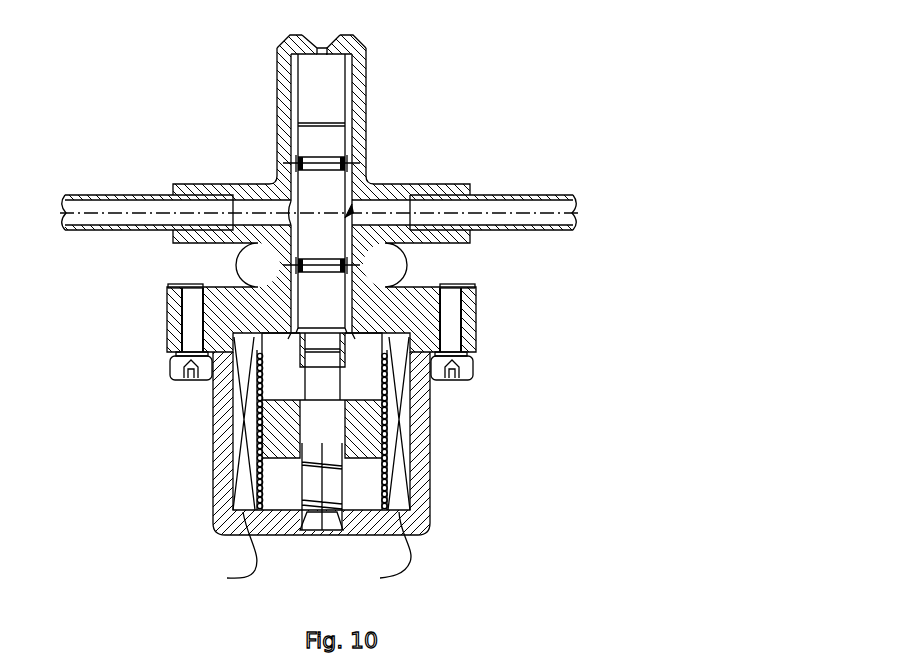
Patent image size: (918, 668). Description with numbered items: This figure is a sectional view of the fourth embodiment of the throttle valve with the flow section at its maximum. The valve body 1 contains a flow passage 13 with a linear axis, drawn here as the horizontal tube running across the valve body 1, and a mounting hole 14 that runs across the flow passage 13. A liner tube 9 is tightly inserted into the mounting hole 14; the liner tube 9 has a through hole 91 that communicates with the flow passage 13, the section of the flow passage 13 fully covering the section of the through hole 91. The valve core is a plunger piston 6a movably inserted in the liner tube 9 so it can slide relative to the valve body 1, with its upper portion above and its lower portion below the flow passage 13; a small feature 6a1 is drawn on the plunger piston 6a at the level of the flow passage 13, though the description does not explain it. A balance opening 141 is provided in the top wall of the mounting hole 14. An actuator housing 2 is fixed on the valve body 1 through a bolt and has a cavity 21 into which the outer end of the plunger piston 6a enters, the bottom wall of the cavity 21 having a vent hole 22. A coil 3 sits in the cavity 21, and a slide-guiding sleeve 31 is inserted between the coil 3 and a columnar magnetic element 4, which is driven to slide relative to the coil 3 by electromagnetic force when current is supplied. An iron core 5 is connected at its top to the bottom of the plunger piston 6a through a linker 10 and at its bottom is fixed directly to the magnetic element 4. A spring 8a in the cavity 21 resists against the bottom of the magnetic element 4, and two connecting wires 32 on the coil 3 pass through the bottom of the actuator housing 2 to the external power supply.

The valve body 1 is at (362, 55).
The balance opening 141 is at (329, 43).
The liner tube 9 is at (358, 93).
The through hole 91 is at (283, 184).
The mounting hole 14 is at (318, 68).
The plunger piston 6a is at (325, 131).
The opening 6a1 is at (351, 206).
The flow passage 13 is at (240, 190).
The actuator housing 2 is at (232, 352).
The coil 3 is at (400, 385).
The slide-guiding sleeve 31 is at (385, 468).
The iron core 5 is at (318, 372).
The linker 10 is at (345, 350).
The magnetic element 4 is at (278, 433).
The cavity 21 is at (277, 488).
The vent hole 22 is at (300, 513).
The spring 8a is at (340, 503).
The connecting wires 32 is at (256, 568).